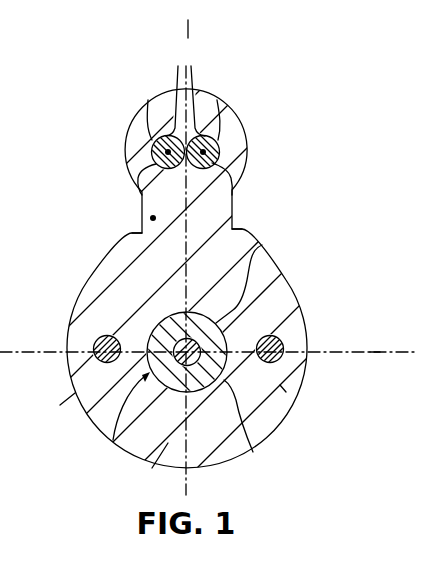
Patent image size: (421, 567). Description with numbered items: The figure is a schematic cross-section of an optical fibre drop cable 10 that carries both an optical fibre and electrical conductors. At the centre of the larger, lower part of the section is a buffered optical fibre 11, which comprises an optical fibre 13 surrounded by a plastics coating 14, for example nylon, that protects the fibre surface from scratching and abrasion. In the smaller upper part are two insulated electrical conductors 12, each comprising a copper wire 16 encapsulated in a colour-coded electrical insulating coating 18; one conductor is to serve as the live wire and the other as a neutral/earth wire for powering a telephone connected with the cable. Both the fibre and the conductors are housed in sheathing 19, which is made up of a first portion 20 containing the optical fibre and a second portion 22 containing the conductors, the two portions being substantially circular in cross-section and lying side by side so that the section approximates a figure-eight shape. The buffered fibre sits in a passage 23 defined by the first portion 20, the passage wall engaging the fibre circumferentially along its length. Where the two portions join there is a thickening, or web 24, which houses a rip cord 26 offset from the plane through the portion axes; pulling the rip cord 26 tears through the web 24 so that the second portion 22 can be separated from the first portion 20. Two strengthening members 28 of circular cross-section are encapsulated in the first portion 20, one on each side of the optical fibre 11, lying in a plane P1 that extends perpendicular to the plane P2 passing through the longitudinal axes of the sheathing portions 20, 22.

The optical fibre drop cable 10 is at (99, 158).
The buffered optical fibre 11 is at (113, 440).
The insulated electrical conductor 12 is at (148, 100).
The optical fibre 13 is at (152, 468).
The plastics coating 14 is at (253, 452).
The copper wire 16 is at (185, 90).
The electrical insulating coating 18 is at (233, 119).
The sheathing 19 is at (76, 392).
The first portion 20 is at (286, 392).
The second portion 22 is at (218, 100).
The passage 23 is at (262, 245).
The web 24 is at (228, 228).
The rip cord 26 is at (153, 218).
The strengthening member 28 is at (94, 337).
The plane P1 is at (370, 350).
The plane P2 is at (186, 31).